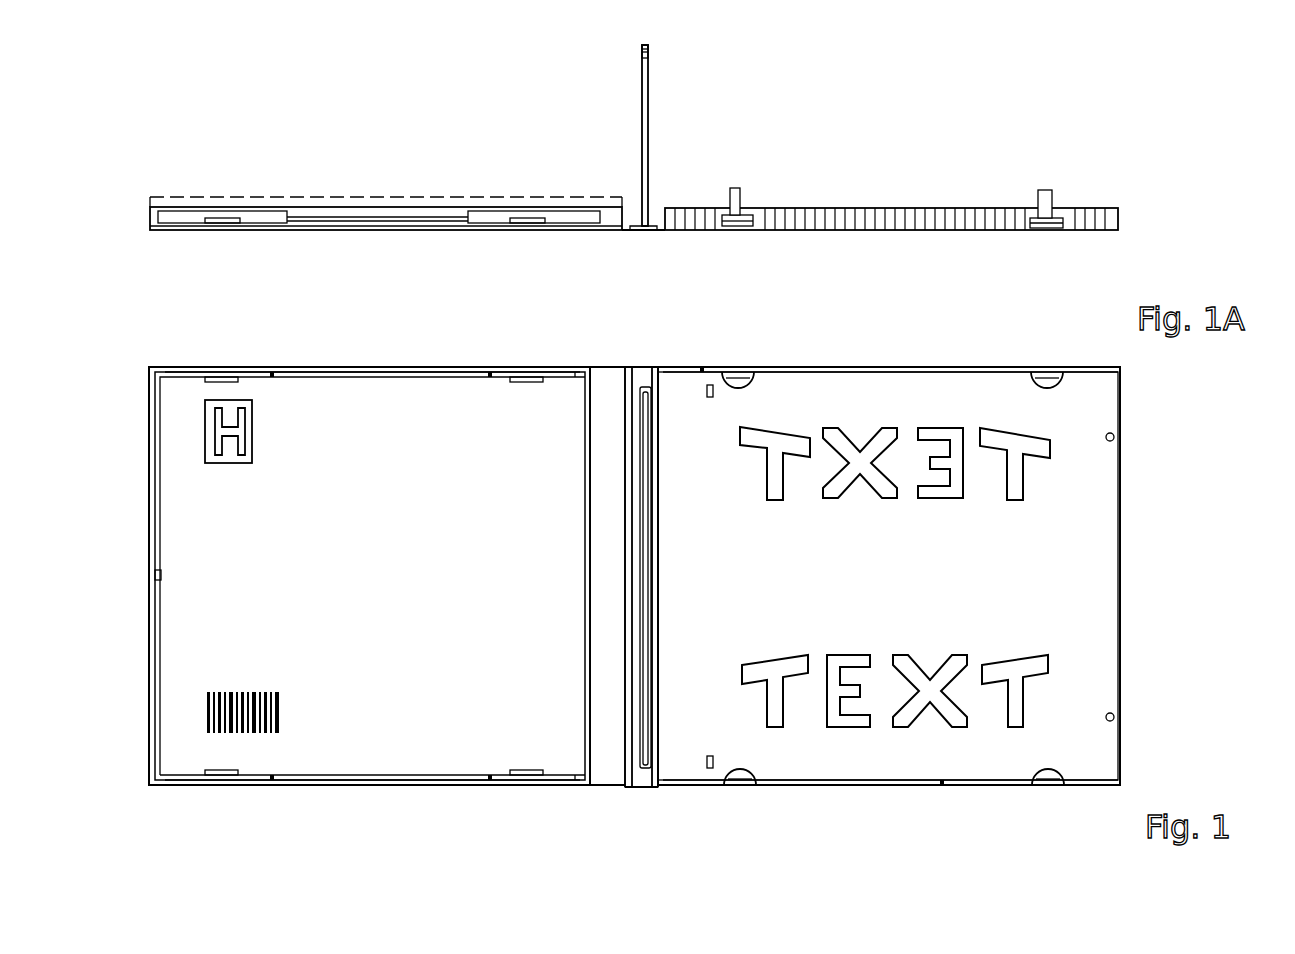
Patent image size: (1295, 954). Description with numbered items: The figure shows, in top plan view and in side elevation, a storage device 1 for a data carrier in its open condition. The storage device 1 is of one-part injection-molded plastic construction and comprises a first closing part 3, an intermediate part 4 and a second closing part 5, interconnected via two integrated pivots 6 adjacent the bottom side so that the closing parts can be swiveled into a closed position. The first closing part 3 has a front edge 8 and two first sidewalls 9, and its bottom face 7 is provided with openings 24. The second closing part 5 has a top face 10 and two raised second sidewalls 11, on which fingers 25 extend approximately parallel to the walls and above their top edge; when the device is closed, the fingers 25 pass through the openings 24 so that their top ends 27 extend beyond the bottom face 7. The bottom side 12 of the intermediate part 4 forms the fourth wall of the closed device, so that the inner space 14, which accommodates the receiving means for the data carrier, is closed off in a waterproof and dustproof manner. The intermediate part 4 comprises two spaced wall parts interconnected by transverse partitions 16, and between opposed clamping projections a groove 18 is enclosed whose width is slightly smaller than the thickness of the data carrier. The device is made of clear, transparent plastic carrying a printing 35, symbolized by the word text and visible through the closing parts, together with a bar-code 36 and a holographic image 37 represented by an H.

In FIG. 1, the storage device 1 is at (148, 386).
In FIG. 1A, the first closing part 3 is at (386, 218).
In FIG. 1, the first closing part 3 is at (190, 692).
In FIG. 1A, the intermediate part 4 is at (649, 104).
In FIG. 1, the intermediate part 4 is at (645, 378).
In FIG. 1, the second closing part 5 is at (1072, 492).
In FIG. 1, the integrated pivots 6 is at (628, 370).
In FIG. 1, the bottom face of the first closing part 7 is at (375, 592).
In FIG. 1A, the front edge 8 is at (200, 207).
In FIG. 1, the front edge 8 is at (156, 472).
In FIG. 1A, the first sidewalls 9 is at (265, 216).
In FIG. 1, the first sidewalls 9 is at (285, 374).
In FIG. 1, the top face 10 is at (943, 592).
In FIG. 1A, the second sidewalls 11 is at (857, 218).
In FIG. 1, the second sidewalls 11 is at (918, 368).
In FIG. 1A, the bottom side of the intermediate part 12 is at (632, 212).
In FIG. 1A, the inner space 14 is at (333, 210).
In FIG. 1A, the transverse partitions 16 is at (645, 40).
In FIG. 1A, the groove 18 is at (649, 50).
In FIG. 1, the groove 18 is at (650, 605).
In FIG. 1, the openings 24 is at (240, 382).
In FIG. 1A, the fingers 25 is at (736, 198).
In FIG. 1, the fingers 25 is at (133, 575).
In FIG. 1A, the top ends 27 is at (1044, 190).
In FIG. 1, the printing 35 is at (835, 715).
In FIG. 1, the bar-code 36 is at (195, 724).
In FIG. 1, the holographic image 37 is at (200, 390).